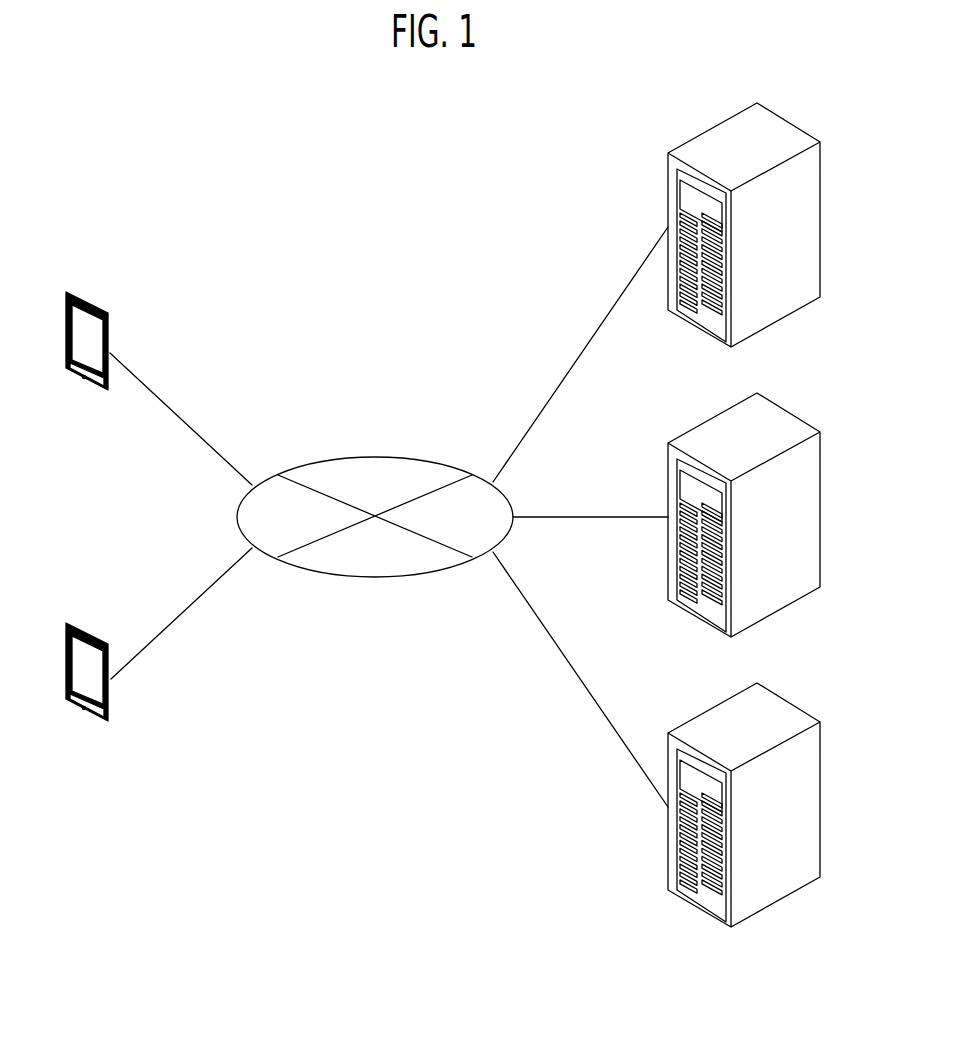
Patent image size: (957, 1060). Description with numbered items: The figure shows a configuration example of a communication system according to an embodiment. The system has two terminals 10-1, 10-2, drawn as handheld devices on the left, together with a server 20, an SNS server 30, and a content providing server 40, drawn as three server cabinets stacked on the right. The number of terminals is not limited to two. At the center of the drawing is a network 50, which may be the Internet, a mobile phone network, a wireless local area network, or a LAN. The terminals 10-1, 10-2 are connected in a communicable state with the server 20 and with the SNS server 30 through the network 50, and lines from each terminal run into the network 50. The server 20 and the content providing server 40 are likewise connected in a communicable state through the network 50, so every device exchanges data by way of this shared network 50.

The terminal 10-1 is at (97, 302).
The terminal 10-2 is at (110, 693).
The server 20 is at (792, 120).
The SNS server 30 is at (763, 503).
The content providing server 40 is at (763, 793).
The network 50 is at (387, 457).